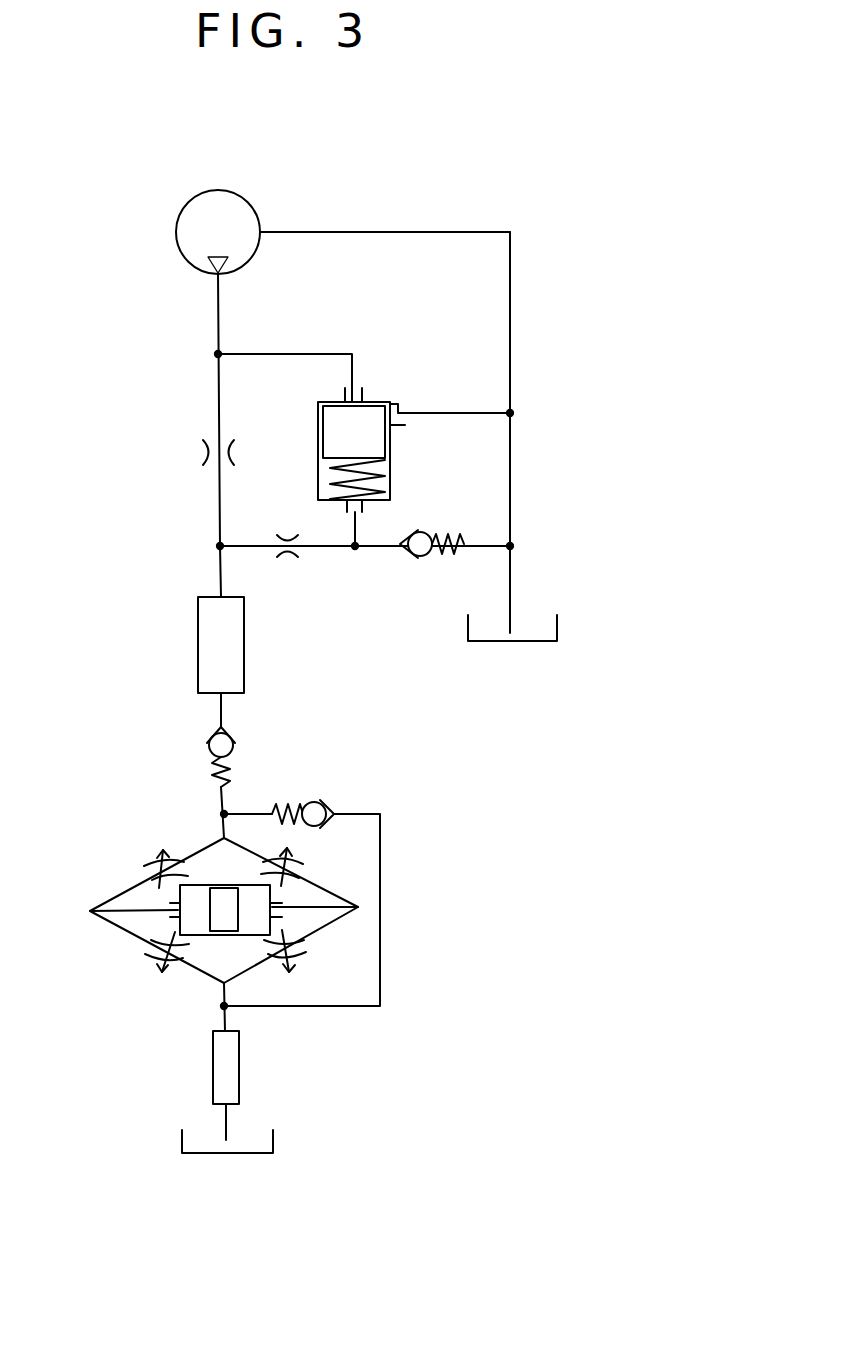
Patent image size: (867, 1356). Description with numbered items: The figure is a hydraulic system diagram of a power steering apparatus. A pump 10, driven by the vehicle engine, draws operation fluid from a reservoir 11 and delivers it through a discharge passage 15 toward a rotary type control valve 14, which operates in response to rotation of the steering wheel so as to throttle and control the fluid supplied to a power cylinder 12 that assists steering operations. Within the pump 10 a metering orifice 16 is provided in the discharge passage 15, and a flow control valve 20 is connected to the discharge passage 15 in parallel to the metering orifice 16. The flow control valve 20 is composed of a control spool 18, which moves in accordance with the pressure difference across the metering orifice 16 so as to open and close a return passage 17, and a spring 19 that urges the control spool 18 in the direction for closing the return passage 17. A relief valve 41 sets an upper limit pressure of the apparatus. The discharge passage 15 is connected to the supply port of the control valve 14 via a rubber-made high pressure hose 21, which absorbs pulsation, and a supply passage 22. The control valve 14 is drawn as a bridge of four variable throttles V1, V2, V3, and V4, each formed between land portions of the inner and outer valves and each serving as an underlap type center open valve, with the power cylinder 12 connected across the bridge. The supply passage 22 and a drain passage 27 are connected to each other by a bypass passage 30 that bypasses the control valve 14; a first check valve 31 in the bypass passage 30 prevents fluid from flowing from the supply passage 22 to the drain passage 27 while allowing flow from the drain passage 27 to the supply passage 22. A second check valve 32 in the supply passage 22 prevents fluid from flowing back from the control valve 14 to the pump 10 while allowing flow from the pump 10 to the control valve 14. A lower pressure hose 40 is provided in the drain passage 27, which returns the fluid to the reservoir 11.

The pump 10 is at (176, 232).
The reservoir 11 is at (250, 1155).
The power cylinder 12 is at (203, 935).
The rotary type control valve 14 is at (197, 930).
The discharge passage 15 is at (218, 336).
The metering orifice 16 is at (203, 458).
The return passage 17 is at (398, 407).
The control spool 18 is at (332, 427).
The spring 19 is at (373, 483).
The flow control valve 20 is at (349, 414).
The high pressure hose 21 is at (208, 636).
The supply passage 22 is at (218, 792).
The drain passage 27 is at (230, 1020).
The bypass passage 30 is at (383, 935).
The first check valve 31 is at (325, 800).
The second check valve 32 is at (238, 735).
The lower pressure hose 40 is at (228, 1072).
The relief valve 41 is at (418, 527).
The variable throttle V1 is at (155, 861).
The variable throttle V2 is at (297, 867).
The variable throttle V3 is at (150, 962).
The variable throttle V4 is at (299, 961).